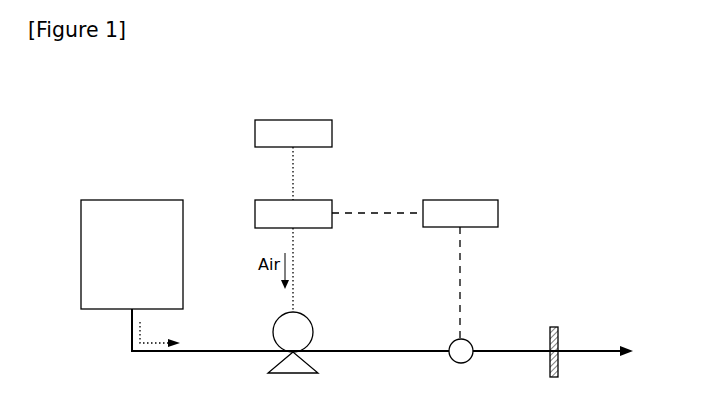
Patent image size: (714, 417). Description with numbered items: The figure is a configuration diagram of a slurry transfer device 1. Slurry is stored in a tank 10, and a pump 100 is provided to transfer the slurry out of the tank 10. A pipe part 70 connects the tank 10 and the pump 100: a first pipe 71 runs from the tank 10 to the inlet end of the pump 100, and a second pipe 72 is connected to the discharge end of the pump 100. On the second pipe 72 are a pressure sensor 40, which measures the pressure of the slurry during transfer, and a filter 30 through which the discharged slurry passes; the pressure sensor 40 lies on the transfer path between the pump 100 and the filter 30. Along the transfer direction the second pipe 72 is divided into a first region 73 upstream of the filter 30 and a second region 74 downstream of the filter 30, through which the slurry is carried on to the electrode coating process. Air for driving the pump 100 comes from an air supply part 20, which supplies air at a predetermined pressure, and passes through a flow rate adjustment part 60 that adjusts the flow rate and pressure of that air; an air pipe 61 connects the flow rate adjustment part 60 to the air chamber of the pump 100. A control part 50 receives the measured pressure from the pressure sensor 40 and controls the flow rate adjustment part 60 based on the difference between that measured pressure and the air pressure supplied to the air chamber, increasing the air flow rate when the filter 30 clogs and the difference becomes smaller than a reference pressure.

The slurry transfer device 1 is at (61, 161).
The tank 10 is at (133, 199).
The air supply part 20 is at (297, 120).
The filter 30 is at (553, 327).
The pressure sensor 40 is at (460, 364).
The control part 50 is at (461, 200).
The flow rate adjustment part 60 is at (323, 200).
The air pipe 61 is at (295, 237).
The pipe part 70 is at (108, 352).
The first pipe 71 is at (218, 352).
The second pipe 72 is at (378, 352).
The first region 73 is at (508, 352).
The second region 74 is at (597, 352).
The pump 100 is at (330, 320).